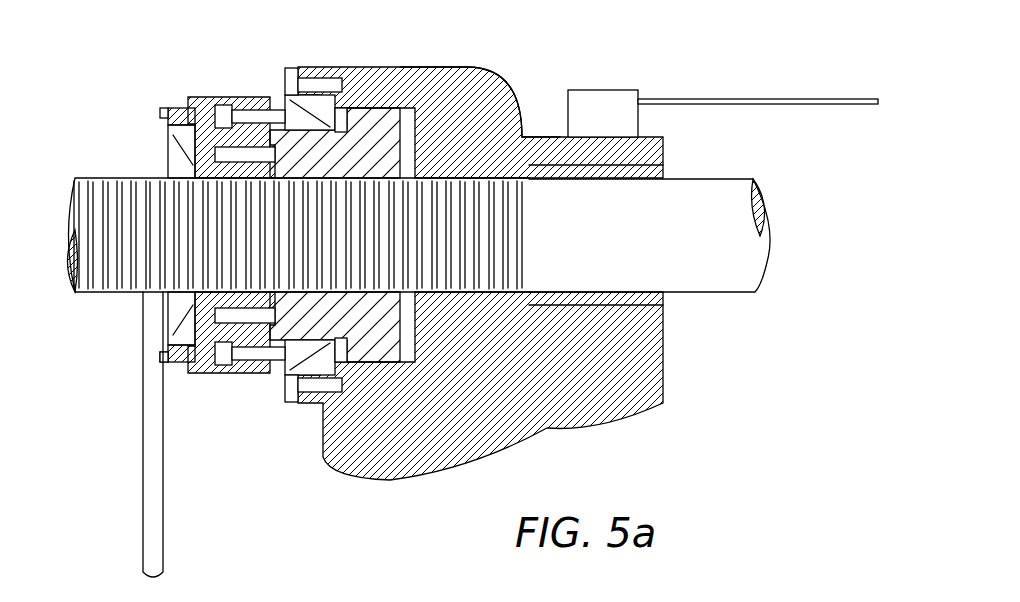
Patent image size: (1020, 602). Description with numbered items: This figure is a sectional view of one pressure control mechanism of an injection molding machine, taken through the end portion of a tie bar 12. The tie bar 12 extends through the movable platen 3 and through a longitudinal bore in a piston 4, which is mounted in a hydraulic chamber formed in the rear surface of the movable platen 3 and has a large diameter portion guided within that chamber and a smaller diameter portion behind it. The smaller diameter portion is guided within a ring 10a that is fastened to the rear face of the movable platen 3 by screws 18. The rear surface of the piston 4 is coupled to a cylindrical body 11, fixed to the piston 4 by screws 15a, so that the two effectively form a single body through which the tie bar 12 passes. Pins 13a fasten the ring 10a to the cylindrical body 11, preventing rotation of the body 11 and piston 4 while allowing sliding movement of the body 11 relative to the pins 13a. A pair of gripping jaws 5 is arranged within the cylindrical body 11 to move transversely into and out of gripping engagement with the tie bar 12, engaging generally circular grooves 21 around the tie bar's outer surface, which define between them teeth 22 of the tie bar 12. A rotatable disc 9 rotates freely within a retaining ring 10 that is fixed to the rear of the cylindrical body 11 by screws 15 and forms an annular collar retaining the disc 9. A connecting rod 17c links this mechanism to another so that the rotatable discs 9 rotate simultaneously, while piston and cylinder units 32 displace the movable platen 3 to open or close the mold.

The movable platen 3 is at (463, 117).
The piston 4 is at (470, 72).
The gripping jaws 5 is at (200, 175).
The rotatable disc 9 is at (160, 342).
The retaining ring 10 is at (177, 362).
The ring 10a is at (355, 105).
The cylindrical body 11 is at (205, 97).
The tie bar 12 is at (720, 196).
The pins 13a is at (247, 115).
The screws 15 is at (170, 108).
The screws 15a is at (230, 372).
The third connecting rod 17c is at (150, 455).
The screws 18 is at (312, 68).
The grooves 21 is at (100, 190).
The teeth 22 is at (72, 208).
The piston and cylinder units 32 is at (723, 99).